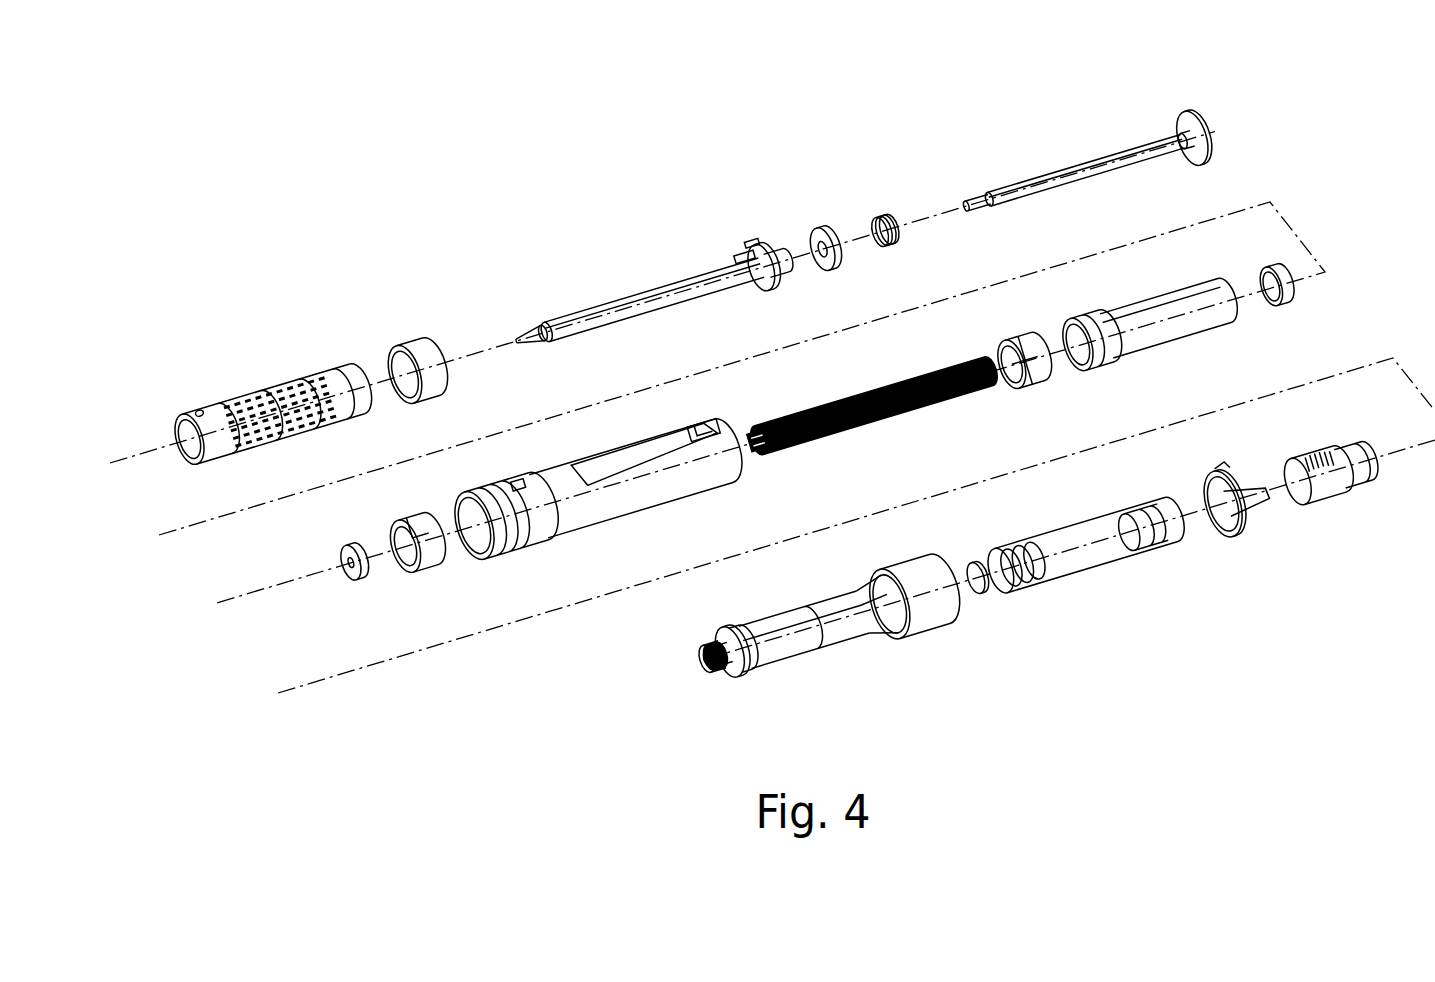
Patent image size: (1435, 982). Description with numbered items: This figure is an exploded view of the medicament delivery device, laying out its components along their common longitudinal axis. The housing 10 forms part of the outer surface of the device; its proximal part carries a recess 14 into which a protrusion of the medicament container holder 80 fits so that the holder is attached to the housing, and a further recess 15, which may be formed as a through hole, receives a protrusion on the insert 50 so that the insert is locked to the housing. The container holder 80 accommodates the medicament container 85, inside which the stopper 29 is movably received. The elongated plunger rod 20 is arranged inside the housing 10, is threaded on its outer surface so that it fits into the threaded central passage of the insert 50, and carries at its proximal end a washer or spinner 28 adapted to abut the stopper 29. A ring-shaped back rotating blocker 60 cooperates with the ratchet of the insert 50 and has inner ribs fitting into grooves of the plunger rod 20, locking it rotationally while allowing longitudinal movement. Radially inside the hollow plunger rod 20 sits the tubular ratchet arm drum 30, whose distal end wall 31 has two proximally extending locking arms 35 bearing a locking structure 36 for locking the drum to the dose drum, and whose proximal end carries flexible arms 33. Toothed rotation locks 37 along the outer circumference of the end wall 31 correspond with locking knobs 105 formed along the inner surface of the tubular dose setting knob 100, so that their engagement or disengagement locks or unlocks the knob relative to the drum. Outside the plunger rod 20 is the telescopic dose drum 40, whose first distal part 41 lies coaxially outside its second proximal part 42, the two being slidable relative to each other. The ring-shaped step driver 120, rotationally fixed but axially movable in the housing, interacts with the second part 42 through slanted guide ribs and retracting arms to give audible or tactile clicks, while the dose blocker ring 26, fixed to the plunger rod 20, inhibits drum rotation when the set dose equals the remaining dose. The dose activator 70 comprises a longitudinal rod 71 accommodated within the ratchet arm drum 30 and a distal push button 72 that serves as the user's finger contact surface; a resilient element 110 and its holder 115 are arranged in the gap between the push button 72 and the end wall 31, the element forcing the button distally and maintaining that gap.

The housing 10 is at (585, 498).
The recess 14 is at (482, 490).
The recess 15 is at (512, 487).
The plunger rod 20 is at (890, 430).
The dose blocker ring 26 is at (1296, 286).
The washer or spinner 28 is at (342, 565).
The stopper 29 is at (1172, 550).
The ratchet arm drum 30 is at (640, 300).
The distal end wall 31 is at (770, 255).
The flexible arms 33 is at (548, 318).
The locking arms 35 is at (752, 248).
The locking structure 36 is at (738, 255).
The rotation locks 37 is at (776, 292).
The telescopic dose drum 40 is at (712, 379).
The first distal part of dose drum 41 is at (305, 428).
The second proximal part of dose drum 42 is at (1170, 323).
The insert 50 is at (432, 548).
The back rotating blocker 60 is at (1330, 500).
The dose activator 70 is at (1140, 167).
The longitudinal rod 71 is at (1118, 167).
The push button 72 is at (1212, 135).
The medicament container holder 80 is at (822, 633).
The medicament container 85 is at (1080, 575).
The dose setting knob 100 is at (438, 377).
The locking knobs 105 is at (410, 350).
The resilient element 110 is at (893, 232).
The holder 115 is at (836, 247).
The step driver 120 is at (1040, 372).